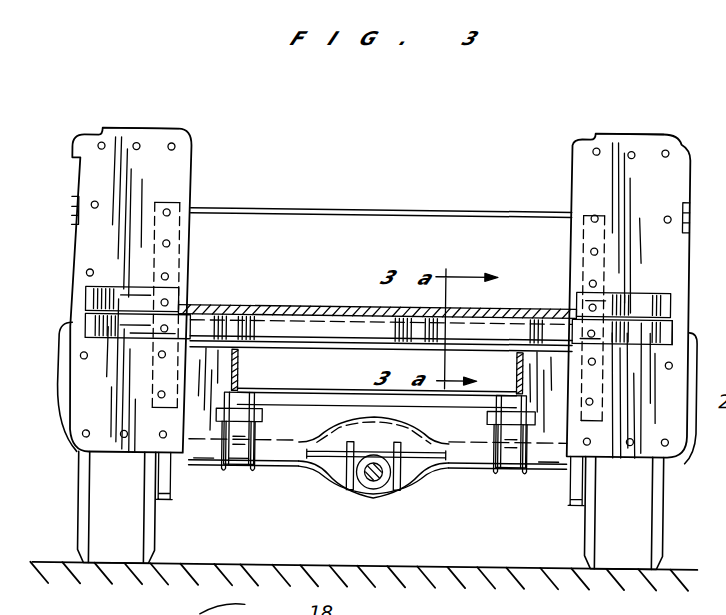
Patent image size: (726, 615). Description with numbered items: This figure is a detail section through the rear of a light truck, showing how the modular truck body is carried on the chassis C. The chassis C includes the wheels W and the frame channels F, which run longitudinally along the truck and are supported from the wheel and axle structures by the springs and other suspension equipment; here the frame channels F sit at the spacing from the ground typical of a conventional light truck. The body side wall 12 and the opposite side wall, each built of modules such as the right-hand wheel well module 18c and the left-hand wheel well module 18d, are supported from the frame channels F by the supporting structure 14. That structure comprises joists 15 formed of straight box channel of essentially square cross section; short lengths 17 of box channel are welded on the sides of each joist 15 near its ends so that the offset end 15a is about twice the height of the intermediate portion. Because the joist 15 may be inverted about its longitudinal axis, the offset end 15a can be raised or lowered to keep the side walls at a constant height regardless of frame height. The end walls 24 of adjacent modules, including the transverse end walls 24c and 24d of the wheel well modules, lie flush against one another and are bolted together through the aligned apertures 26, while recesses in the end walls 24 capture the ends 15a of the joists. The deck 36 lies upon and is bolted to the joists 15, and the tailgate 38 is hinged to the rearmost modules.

The body side wall 12 is at (191, 160).
The supporting structure 14 is at (343, 355).
The joist 15 is at (350, 330).
The offset end 15a is at (674, 340).
The short length of box channel 17 is at (656, 310).
The right-hand wheel well module 18c is at (140, 131).
The left-hand wheel well module 18d is at (646, 128).
The end wall 24 is at (175, 185).
The transverse end wall 24c is at (82, 440).
The transverse end wall 24d is at (666, 416).
The aligned apertures 26 is at (664, 220).
The deck 36 is at (257, 310).
The tailgate 38 is at (329, 231).
The chassis C is at (498, 480).
The frame channels F is at (238, 373).
The wheels W is at (641, 514).